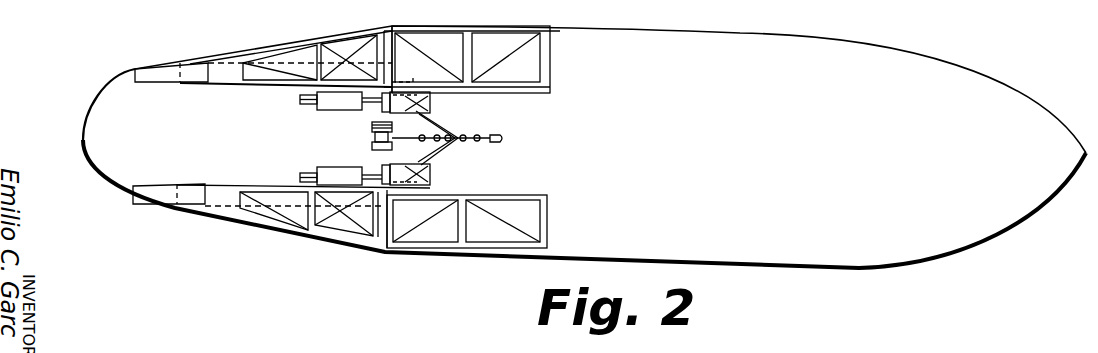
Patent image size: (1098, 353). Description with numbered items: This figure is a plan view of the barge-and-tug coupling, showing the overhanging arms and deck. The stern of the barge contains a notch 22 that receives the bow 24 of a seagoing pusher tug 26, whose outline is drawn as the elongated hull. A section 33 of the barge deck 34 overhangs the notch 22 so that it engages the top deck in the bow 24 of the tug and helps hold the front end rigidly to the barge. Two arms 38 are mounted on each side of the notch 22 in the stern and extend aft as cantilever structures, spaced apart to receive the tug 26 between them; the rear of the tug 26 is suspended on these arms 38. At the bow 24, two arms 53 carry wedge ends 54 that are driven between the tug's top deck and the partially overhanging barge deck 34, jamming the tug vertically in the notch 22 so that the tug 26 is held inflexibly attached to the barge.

The notch 22 is at (462, 126).
The bow 24 is at (427, 151).
The seagoing pusher tug 26 is at (120, 90).
The section of barge deck 33 is at (430, 103).
The barge deck 34 is at (730, 50).
The arms 38 is at (283, 42).
The arms 53 is at (372, 174).
The wedge ends 54 is at (382, 108).